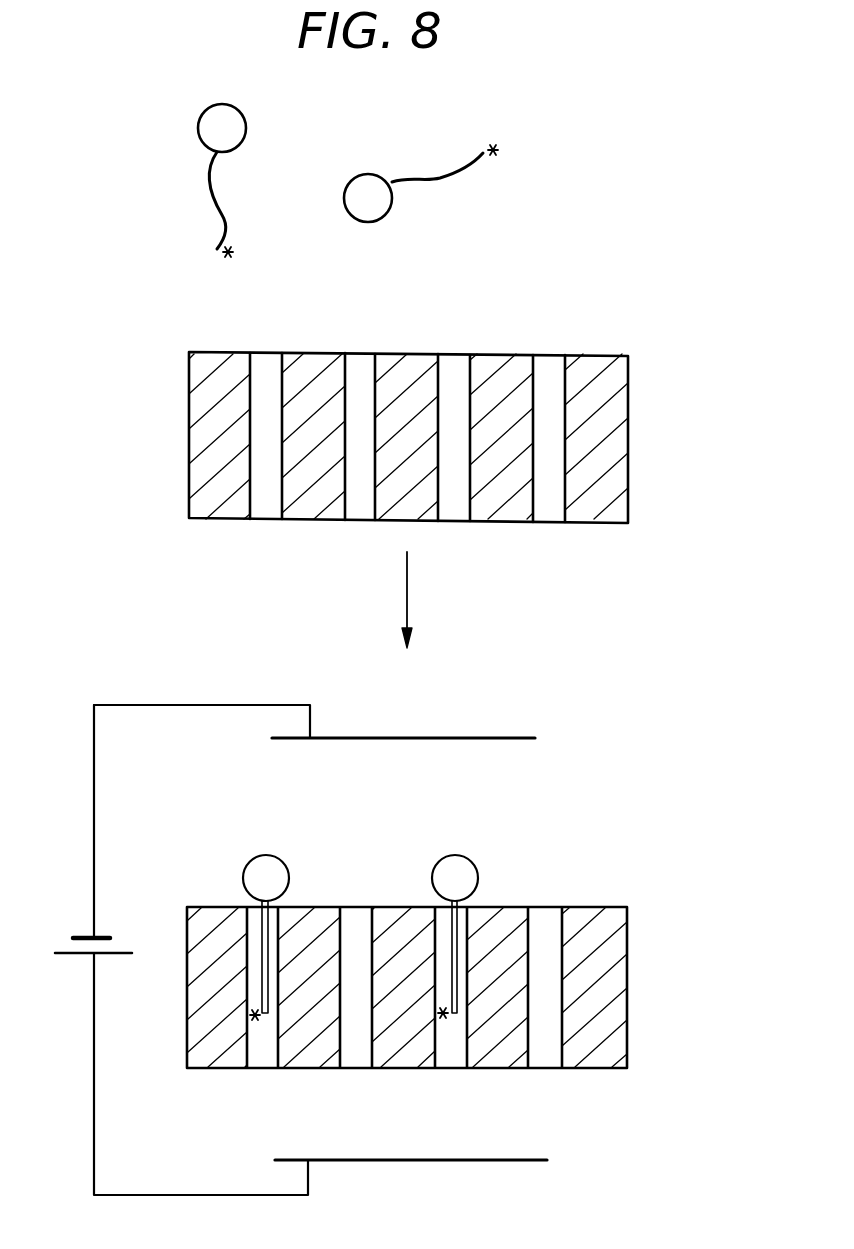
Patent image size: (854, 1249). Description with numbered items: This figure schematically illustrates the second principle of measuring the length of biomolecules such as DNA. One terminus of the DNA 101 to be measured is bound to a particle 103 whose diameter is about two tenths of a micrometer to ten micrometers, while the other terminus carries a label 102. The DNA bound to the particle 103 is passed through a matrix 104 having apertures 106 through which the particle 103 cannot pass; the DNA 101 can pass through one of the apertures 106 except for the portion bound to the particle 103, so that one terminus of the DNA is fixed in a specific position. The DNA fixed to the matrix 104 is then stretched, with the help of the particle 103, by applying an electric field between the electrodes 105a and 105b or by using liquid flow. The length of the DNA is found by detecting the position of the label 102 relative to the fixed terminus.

The DNA 101 is at (218, 213).
The label 102 is at (233, 253).
The particle 103 is at (207, 105).
The matrix 104 is at (628, 445).
The electrode 105a is at (507, 737).
The electrode 105b is at (520, 1160).
The aperture 106 is at (545, 355).